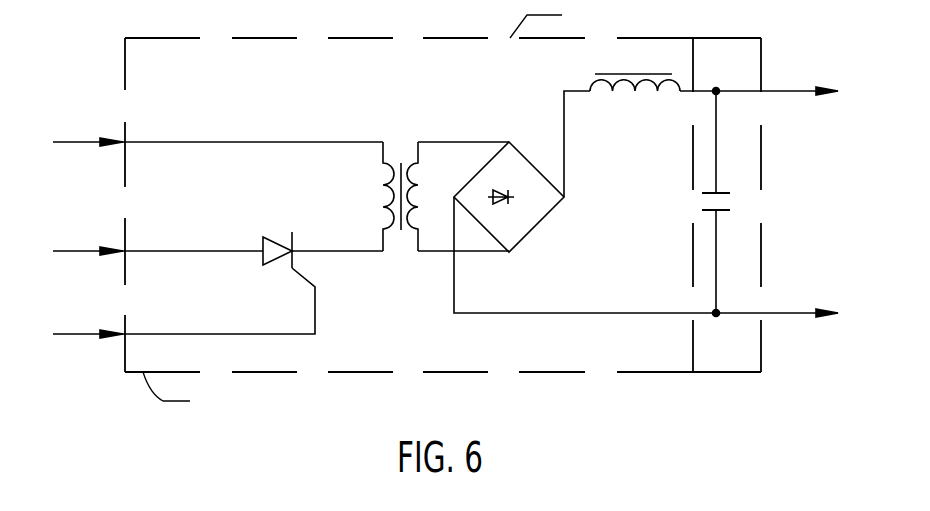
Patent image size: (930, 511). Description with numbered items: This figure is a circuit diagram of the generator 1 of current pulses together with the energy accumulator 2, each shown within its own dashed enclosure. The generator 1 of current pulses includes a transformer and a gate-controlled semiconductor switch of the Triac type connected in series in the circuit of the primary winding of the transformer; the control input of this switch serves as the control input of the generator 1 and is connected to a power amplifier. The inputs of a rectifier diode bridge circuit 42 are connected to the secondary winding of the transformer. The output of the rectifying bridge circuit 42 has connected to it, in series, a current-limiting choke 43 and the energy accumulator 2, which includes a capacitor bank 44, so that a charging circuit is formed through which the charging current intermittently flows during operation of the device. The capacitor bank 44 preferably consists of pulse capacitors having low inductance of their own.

The generator of current pulses 1 is at (125, 90).
The energy accumulator 2 is at (761, 58).
The rectifier diode bridge circuit 42 is at (527, 162).
The current-limiting choke 43 is at (618, 83).
The capacitor bank 44 is at (722, 211).